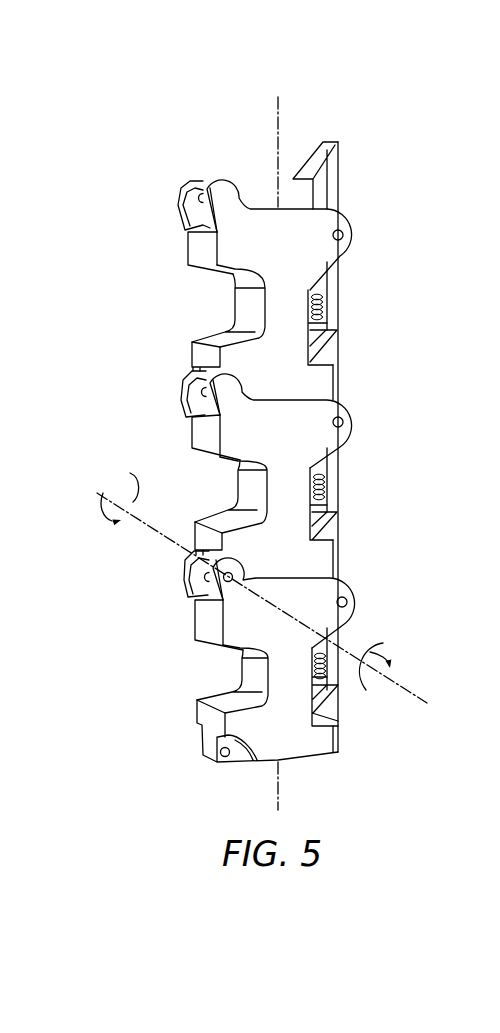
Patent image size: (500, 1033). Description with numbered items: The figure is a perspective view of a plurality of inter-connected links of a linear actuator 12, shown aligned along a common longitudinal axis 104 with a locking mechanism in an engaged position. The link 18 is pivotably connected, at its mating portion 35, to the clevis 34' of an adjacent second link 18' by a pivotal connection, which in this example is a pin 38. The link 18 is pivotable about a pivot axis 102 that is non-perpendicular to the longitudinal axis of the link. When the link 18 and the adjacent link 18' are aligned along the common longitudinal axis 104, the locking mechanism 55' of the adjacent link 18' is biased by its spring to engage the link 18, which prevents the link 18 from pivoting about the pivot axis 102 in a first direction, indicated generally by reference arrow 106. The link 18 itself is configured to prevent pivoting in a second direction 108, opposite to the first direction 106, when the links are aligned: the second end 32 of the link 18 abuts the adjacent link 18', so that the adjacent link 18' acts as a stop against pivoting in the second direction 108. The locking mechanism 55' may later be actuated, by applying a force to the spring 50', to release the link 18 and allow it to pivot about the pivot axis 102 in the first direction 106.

The fastening assembly 12 is at (285, 462).
The link 18 is at (296, 506).
The adjacent second link 18' is at (299, 713).
The second end 32 is at (310, 563).
The mating portion 35 is at (190, 563).
The clevis 34' is at (185, 616).
The pin 38 is at (225, 580).
The spring 50' is at (357, 693).
The locking mechanism 55' is at (279, 603).
The pivot axis 102 is at (420, 687).
The common longitudinal axis 104 is at (277, 133).
The first direction 106 is at (130, 473).
The second direction 108 is at (383, 643).